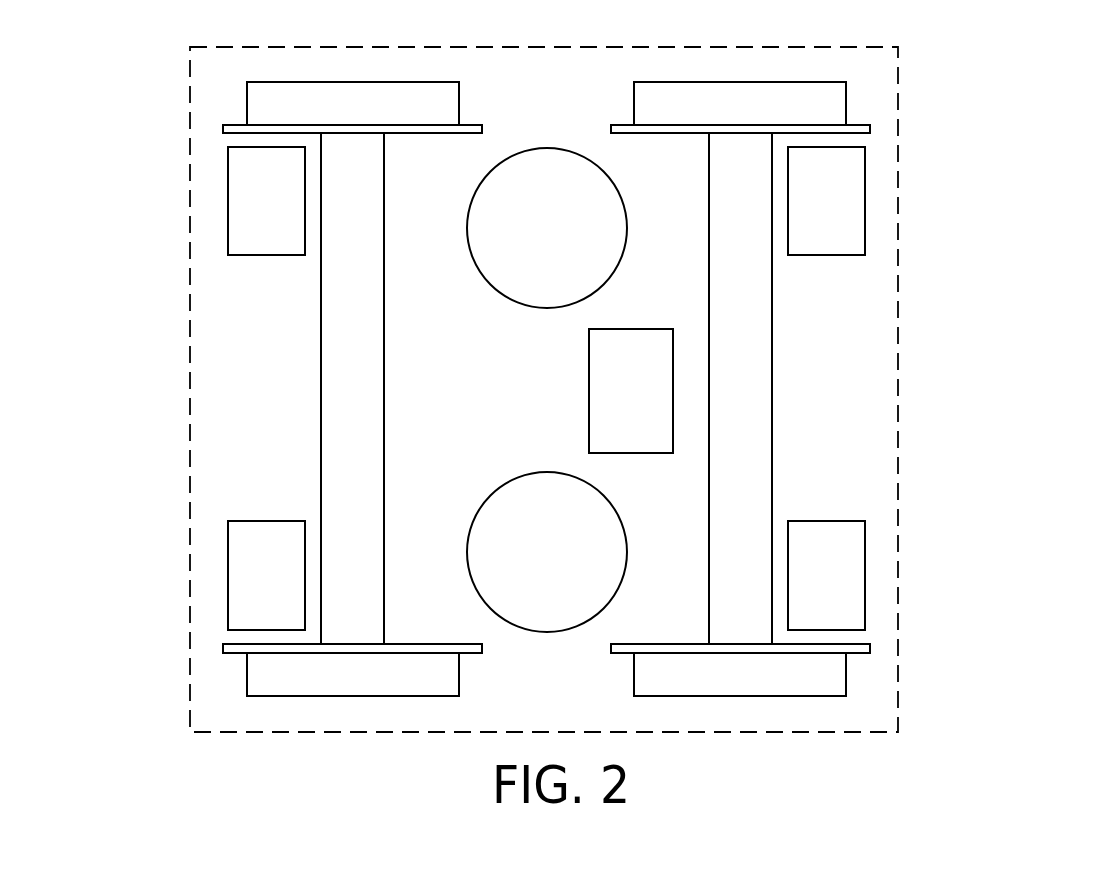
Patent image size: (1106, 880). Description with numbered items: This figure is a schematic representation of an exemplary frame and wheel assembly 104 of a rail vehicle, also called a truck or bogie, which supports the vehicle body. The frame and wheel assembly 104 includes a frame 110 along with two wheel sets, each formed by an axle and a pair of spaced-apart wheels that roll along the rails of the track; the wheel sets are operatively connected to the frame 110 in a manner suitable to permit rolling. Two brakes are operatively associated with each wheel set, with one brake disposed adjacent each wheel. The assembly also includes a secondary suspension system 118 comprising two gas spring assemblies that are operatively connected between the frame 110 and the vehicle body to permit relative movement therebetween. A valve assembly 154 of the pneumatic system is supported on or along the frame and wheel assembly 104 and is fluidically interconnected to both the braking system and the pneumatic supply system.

The frame and wheel assembly 104 is at (1012, 138).
The frame 110 is at (899, 417).
The secondary suspension system 118 is at (556, 128).
The valve assembly 154 is at (611, 395).